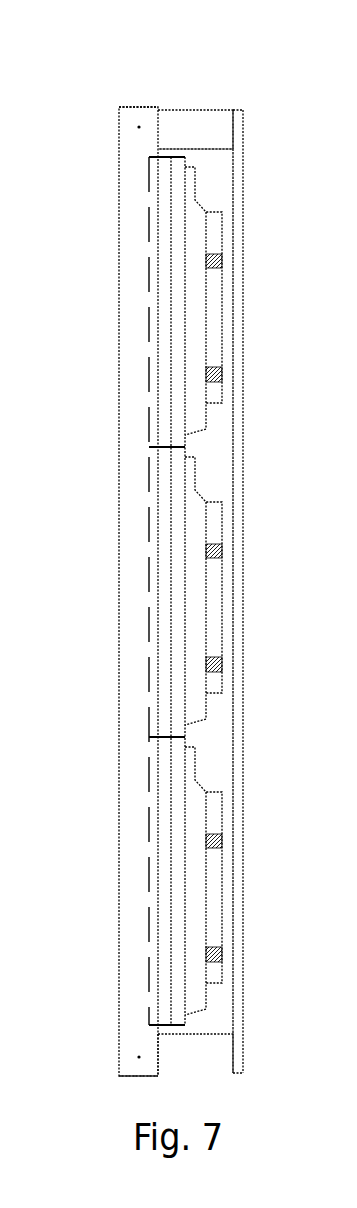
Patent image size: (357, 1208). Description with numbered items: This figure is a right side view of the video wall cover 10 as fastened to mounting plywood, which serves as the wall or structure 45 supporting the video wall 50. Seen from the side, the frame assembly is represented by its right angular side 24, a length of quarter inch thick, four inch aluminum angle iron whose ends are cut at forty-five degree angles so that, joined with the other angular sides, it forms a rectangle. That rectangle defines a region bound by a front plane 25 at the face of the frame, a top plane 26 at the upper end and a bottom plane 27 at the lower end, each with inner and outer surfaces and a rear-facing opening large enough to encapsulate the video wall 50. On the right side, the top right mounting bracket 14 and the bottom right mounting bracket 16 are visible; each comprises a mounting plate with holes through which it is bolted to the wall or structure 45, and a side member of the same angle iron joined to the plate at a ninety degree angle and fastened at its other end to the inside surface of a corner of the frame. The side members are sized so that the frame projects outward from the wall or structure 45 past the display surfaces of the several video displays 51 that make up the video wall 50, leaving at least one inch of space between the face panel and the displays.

The video wall cover 10 is at (104, 94).
The top right mounting bracket 14 is at (188, 120).
The bottom right mounting bracket 16 is at (200, 1051).
The right angular side 24 is at (133, 236).
The front plane 25 is at (119, 666).
The top plane 26 is at (139, 107).
The bottom plane 27 is at (140, 1076).
The wall or structure 45 is at (238, 459).
The video wall 50 is at (149, 373).
The video displays 51 is at (212, 347).